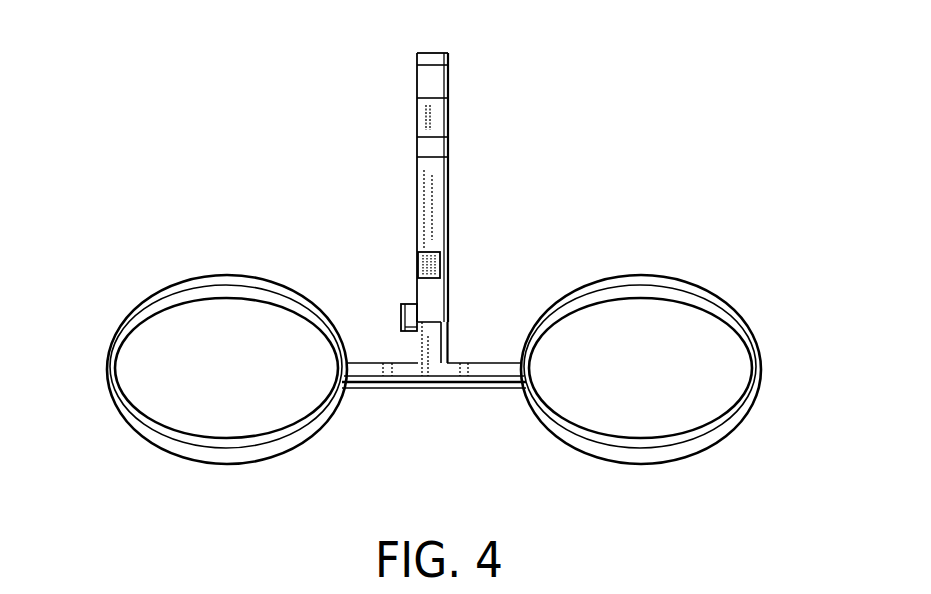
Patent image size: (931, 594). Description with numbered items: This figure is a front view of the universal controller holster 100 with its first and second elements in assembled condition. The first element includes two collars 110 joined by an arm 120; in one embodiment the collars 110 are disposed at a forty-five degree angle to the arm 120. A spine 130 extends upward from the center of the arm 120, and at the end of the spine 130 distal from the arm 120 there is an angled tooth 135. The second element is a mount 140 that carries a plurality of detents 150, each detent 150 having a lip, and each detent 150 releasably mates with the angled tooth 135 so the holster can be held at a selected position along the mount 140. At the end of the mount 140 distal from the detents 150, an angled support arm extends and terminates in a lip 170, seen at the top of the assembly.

The universal controller holster 100 is at (275, 202).
The collars 110 is at (562, 412).
The arm 120 is at (455, 379).
The spine 130 is at (448, 346).
The angled tooth 135 is at (399, 313).
The mount 140 is at (431, 213).
The detents 150 is at (417, 306).
The lip 170 is at (425, 85).